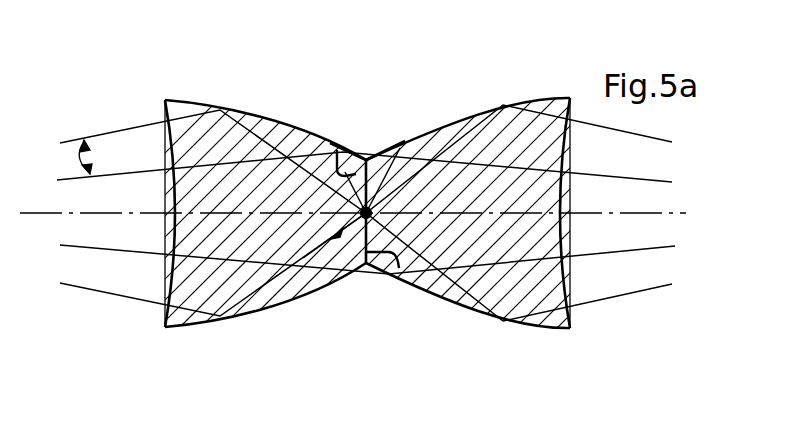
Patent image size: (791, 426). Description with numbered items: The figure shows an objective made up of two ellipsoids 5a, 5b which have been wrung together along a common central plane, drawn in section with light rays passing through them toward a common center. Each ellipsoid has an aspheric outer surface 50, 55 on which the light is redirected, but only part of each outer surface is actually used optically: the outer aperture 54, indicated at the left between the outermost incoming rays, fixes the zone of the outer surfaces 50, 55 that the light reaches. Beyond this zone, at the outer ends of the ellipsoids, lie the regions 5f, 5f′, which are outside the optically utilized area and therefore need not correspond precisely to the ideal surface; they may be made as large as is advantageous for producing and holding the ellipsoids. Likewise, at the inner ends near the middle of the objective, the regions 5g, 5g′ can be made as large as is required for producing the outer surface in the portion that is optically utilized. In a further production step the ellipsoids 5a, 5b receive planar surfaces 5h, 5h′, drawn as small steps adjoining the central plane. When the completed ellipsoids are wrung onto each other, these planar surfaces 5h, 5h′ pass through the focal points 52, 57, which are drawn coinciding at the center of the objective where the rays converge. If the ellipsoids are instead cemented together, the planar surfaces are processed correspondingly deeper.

The ellipsoid 5a is at (275, 133).
The ellipsoid 5b is at (460, 128).
The region at outer end 5f is at (193, 99).
The region at outer end 5f′ is at (533, 98).
The region at inner end 5g is at (362, 148).
The region at inner end 5g′ is at (384, 150).
The planar surface 5h is at (346, 154).
The planar surface 5h′ is at (399, 266).
The outer surface 50 is at (250, 318).
The outer surface 55 is at (488, 316).
The focal point 52 is at (366, 213).
The focal point 57 is at (366, 213).
The outer aperture 54 is at (78, 143).